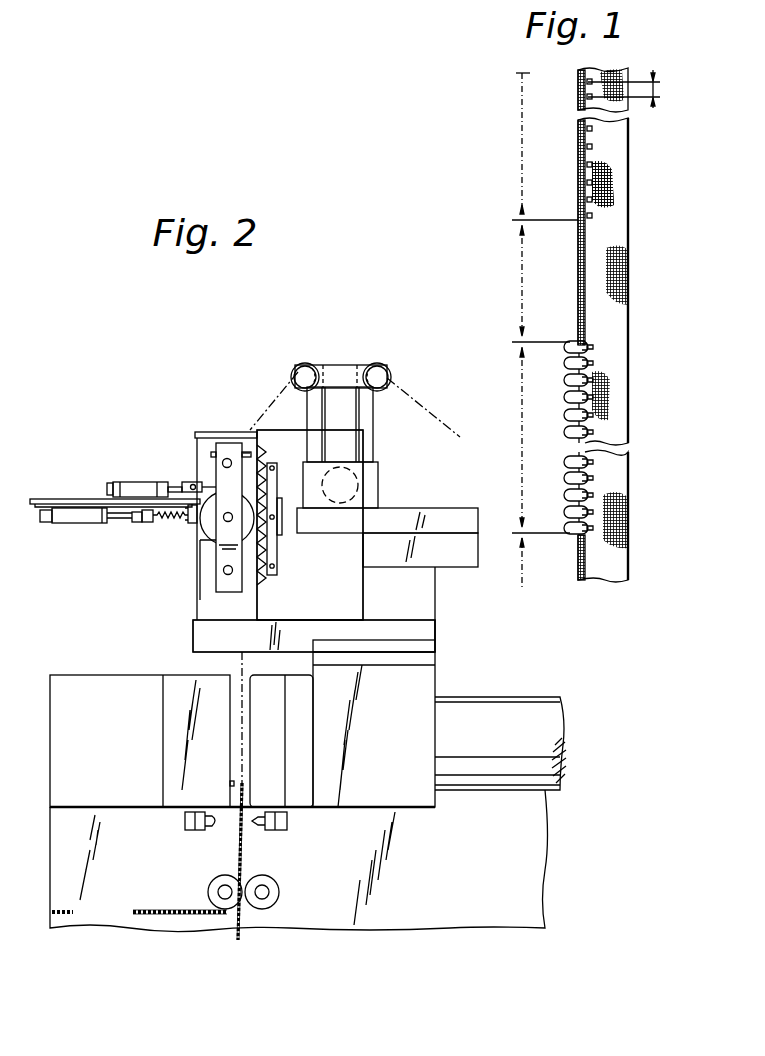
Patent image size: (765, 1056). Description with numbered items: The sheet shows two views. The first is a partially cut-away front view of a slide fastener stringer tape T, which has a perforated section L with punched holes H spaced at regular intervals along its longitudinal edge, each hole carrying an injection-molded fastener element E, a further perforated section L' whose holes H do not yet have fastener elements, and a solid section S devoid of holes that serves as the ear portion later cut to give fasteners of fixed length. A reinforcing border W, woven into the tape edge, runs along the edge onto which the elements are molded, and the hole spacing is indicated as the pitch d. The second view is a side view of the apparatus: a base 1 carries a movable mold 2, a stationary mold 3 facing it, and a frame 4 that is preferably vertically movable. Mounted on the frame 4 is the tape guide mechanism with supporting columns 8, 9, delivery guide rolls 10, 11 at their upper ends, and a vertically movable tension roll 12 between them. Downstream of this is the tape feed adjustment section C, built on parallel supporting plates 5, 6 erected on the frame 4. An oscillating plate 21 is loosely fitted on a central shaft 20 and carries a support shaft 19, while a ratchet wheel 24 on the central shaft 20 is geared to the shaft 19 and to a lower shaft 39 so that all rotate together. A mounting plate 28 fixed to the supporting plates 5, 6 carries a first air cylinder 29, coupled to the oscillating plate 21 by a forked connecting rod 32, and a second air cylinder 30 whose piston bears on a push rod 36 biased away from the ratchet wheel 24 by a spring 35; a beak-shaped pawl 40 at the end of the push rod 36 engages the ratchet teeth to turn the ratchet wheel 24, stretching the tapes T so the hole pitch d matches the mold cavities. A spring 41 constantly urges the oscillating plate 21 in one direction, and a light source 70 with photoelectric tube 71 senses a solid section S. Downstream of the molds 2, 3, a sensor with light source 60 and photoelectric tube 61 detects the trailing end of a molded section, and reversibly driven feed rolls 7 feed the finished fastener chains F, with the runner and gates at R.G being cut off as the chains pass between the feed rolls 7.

In FIG. 2, the base 1 is at (530, 836).
In FIG. 2, the movable mold 2 is at (305, 775).
In FIG. 2, the stationary mold 3 is at (200, 773).
In FIG. 2, the frame 4 is at (428, 620).
In FIG. 2, the supporting plate 5 is at (250, 605).
In FIG. 2, the supporting plate 6 is at (310, 525).
In FIG. 2, the feed rolls 7 is at (207, 892).
In FIG. 2, the supporting column 8 is at (373, 426).
In FIG. 2, the supporting column 9 is at (310, 405).
In FIG. 2, the delivery guide roll 10 is at (380, 364).
In FIG. 2, the delivery guide roll 11 is at (304, 364).
In FIG. 2, the tension roll 12 is at (358, 494).
In FIG. 2, the support shaft 19 is at (222, 464).
In FIG. 2, the central shaft 20 is at (229, 518).
In FIG. 2, the oscillating plate 21 is at (230, 445).
In FIG. 2, the ratchet wheel 24 is at (214, 535).
In FIG. 2, the mounting plate 28 is at (75, 499).
In FIG. 2, the first air cylinder 29 is at (132, 483).
In FIG. 2, the second air cylinder 30 is at (85, 516).
In FIG. 2, the forked connecting rod 32 is at (190, 483).
In FIG. 2, the spring 35 is at (166, 522).
In FIG. 2, the push rod 36 is at (140, 524).
In FIG. 2, the lower shaft 39 is at (195, 623).
In FIG. 2, the beak-shaped pawl 40 is at (192, 524).
In FIG. 2, the spring 41 is at (214, 440).
In FIG. 2, the light source 60 is at (267, 830).
In FIG. 2, the photoelectric tube 61 is at (208, 830).
In FIG. 2, the light source 70 is at (279, 504).
In FIG. 2, the photoelectric tube 71 is at (252, 432).
In FIG. 2, the tape feed adjustment section C is at (131, 368).
In FIG. 1, the slide fastener stringer tape T is at (622, 207).
In FIG. 2, the slide fastener stringer tape T is at (438, 402).
In FIG. 2, the fastener chain F is at (172, 916).
In FIG. 2, the slider guide R.G is at (246, 920).
In FIG. 1, the pitch of the holes d is at (654, 92).
In FIG. 1, the punched holes H is at (593, 147).
In FIG. 1, the reinforcing border W is at (585, 268).
In FIG. 1, the fastener element E is at (590, 380).
In FIG. 1, the perforated section L is at (540, 440).
In FIG. 1, the perforated section L' is at (545, 146).
In FIG. 1, the solid section S is at (541, 407).